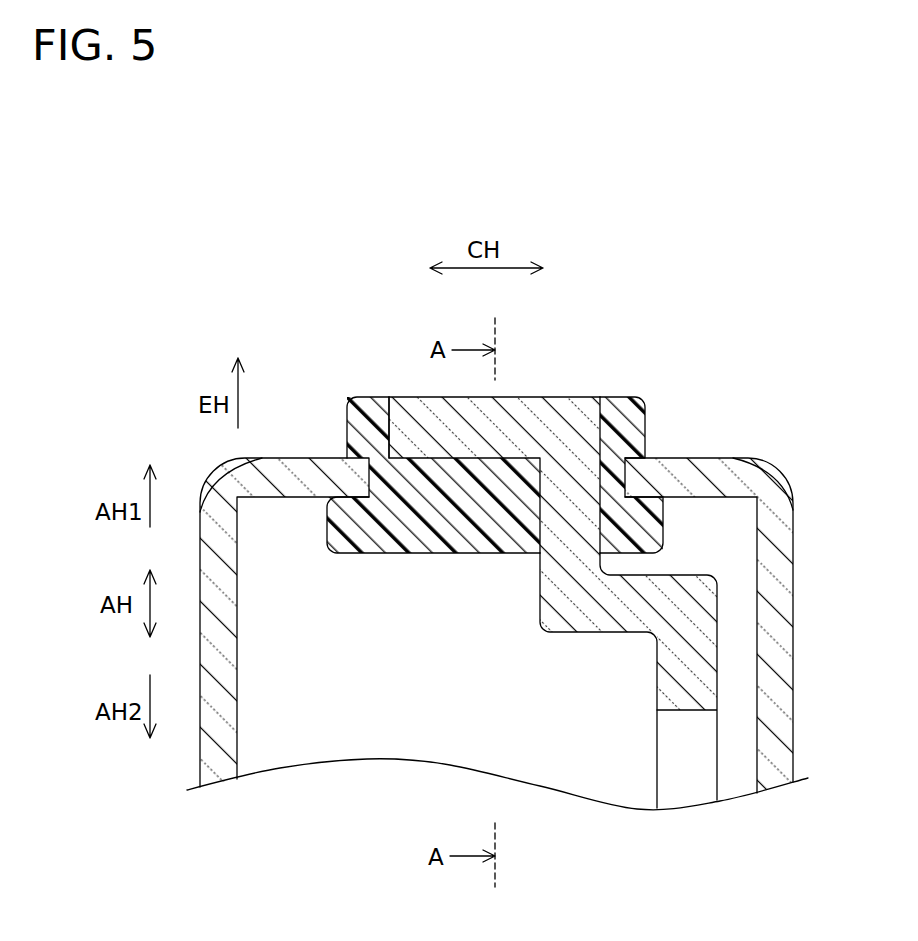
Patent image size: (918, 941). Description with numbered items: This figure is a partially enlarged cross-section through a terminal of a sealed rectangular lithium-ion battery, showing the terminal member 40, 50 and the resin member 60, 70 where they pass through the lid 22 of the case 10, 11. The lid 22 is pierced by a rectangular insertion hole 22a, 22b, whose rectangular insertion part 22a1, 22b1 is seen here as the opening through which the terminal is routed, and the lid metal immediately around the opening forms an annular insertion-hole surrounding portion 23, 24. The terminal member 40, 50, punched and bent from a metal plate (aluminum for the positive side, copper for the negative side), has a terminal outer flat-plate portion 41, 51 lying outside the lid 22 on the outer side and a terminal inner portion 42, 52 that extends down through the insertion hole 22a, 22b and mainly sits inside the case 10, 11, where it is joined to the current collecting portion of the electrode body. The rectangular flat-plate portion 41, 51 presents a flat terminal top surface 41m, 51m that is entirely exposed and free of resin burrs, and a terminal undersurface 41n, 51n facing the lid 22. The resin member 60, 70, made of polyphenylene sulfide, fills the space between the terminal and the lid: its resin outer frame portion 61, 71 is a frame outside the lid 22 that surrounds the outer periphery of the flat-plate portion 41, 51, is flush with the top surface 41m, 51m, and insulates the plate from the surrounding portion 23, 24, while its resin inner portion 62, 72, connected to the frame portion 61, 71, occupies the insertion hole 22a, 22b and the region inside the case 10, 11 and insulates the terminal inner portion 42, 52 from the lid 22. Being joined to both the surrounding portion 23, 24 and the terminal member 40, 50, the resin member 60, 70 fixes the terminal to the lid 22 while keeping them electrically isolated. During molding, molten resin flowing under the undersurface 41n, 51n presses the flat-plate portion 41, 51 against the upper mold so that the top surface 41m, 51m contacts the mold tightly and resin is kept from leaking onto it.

The lid 22 is at (496, 497).
The insertion part 22a1 is at (293, 511).
The insertion part 22b1 is at (387, 458).
The insertion hole 22a is at (686, 497).
The insertion hole 22b is at (686, 497).
The case 11 is at (686, 497).
The case 10 is at (728, 470).
The insertion-hole surrounding portion 23 is at (476, 429).
The insertion-hole surrounding portion 24 is at (292, 357).
The terminal outer flat-plate portion 41 is at (519, 523).
The terminal outer flat-plate portion 51 is at (519, 523).
The terminal top surface 41m is at (499, 283).
The terminal top surface 51m is at (527, 397).
The terminal undersurface 41n is at (384, 682).
The terminal undersurface 51n is at (447, 537).
The terminal inner portion 42 is at (594, 715).
The terminal inner portion 52 is at (588, 607).
The terminal member 40 is at (658, 715).
The terminal member 50 is at (633, 617).
The resin member 60 is at (393, 568).
The resin member 70 is at (393, 568).
The resin outer frame portion 61 is at (364, 383).
The resin outer frame portion 71 is at (378, 430).
The resin inner portion 62 is at (393, 662).
The resin inner portion 72 is at (367, 540).